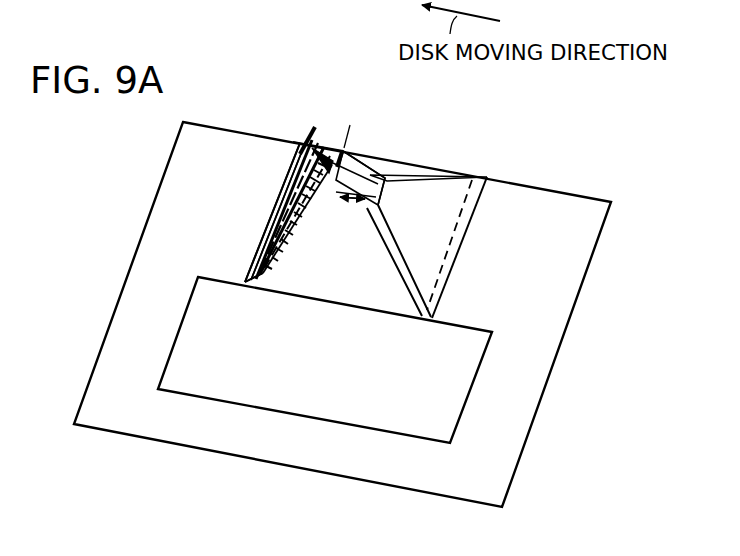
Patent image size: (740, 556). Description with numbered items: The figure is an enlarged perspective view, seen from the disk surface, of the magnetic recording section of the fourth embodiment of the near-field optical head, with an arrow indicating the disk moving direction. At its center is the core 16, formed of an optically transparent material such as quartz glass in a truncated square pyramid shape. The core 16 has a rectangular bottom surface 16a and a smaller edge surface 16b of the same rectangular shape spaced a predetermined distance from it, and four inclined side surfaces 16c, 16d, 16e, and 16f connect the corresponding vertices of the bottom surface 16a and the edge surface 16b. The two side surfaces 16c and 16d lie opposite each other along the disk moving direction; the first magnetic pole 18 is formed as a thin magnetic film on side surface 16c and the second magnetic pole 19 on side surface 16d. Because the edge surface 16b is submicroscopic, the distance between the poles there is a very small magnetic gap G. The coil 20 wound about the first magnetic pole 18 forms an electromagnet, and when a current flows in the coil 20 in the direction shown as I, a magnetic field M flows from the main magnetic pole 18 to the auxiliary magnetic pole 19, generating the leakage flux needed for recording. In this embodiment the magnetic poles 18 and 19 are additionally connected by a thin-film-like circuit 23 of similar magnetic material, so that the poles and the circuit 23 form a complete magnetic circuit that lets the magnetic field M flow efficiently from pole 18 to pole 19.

The core 16 is at (476, 174).
The bottom surface 16a is at (350, 273).
The edge surface 16b is at (353, 183).
The side surface 16c is at (252, 254).
The side surface 16d is at (423, 263).
The side surface 16e is at (417, 170).
The side surface 16f is at (318, 266).
The first magnetic pole 18 is at (293, 195).
The second magnetic pole 19 is at (435, 218).
The coil 20 is at (290, 177).
The circuit 23 is at (316, 455).
The magnetic field M is at (367, 178).
The magnetic gap G is at (345, 210).
The current direction I is at (347, 135).